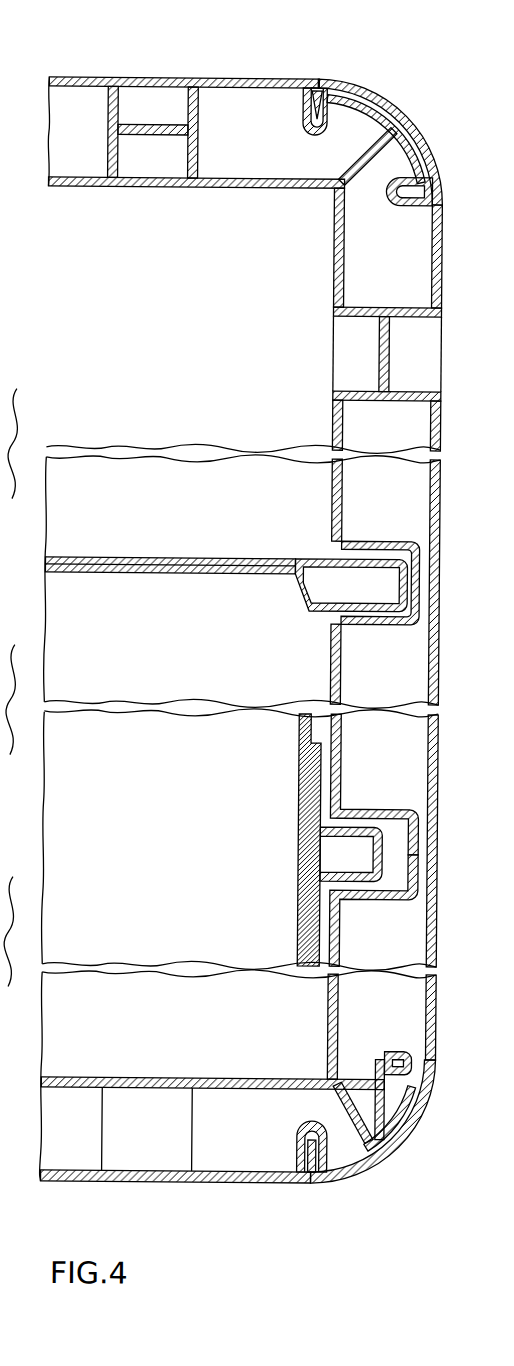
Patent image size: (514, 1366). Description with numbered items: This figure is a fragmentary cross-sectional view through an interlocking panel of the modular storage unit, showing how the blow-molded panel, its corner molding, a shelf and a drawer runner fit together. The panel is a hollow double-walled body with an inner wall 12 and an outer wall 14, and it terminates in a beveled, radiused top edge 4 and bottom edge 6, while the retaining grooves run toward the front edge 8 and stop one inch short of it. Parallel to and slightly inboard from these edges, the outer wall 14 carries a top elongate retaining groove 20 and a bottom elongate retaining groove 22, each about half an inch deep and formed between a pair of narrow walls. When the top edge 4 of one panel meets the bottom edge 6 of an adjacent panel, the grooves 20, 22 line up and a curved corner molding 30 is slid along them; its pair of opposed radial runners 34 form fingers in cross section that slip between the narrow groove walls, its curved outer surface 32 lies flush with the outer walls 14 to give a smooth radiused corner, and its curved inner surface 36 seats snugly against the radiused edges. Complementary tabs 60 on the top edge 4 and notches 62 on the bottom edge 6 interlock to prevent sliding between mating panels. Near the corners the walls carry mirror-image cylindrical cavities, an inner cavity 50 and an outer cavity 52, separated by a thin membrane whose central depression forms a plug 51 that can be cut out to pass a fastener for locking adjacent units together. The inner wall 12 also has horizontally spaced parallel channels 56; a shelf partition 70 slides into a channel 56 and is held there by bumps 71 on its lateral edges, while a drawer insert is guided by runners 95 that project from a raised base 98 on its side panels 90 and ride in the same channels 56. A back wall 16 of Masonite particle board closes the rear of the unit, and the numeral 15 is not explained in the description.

The top edge 4 is at (388, 146).
The bottom edge 6 is at (375, 132).
The front edge 8 is at (504, 1031).
The inner wall 12 is at (72, 190).
The outer wall 14 is at (70, 79).
The panel 15 is at (499, 700).
The back wall 16 is at (496, 743).
The top elongate retaining groove 20 is at (396, 209).
The bottom elongate retaining groove 22 is at (305, 118).
The corner molding 30 is at (420, 106).
The outer surface 32 is at (378, 86).
The radial runner 34 is at (318, 90).
The inner surface 36 is at (428, 166).
The inner cavity 50 is at (150, 100).
The plug 51 is at (157, 133).
The outer cavity 52 is at (152, 165).
The channel 56 is at (420, 584).
The tab 60 is at (378, 1150).
The notch 62 is at (416, 1080).
The shelf partition 70 is at (193, 555).
The bump 71 is at (418, 546).
The side panel 90 is at (302, 922).
The runner 95 is at (324, 855).
The raised base 98 is at (302, 783).